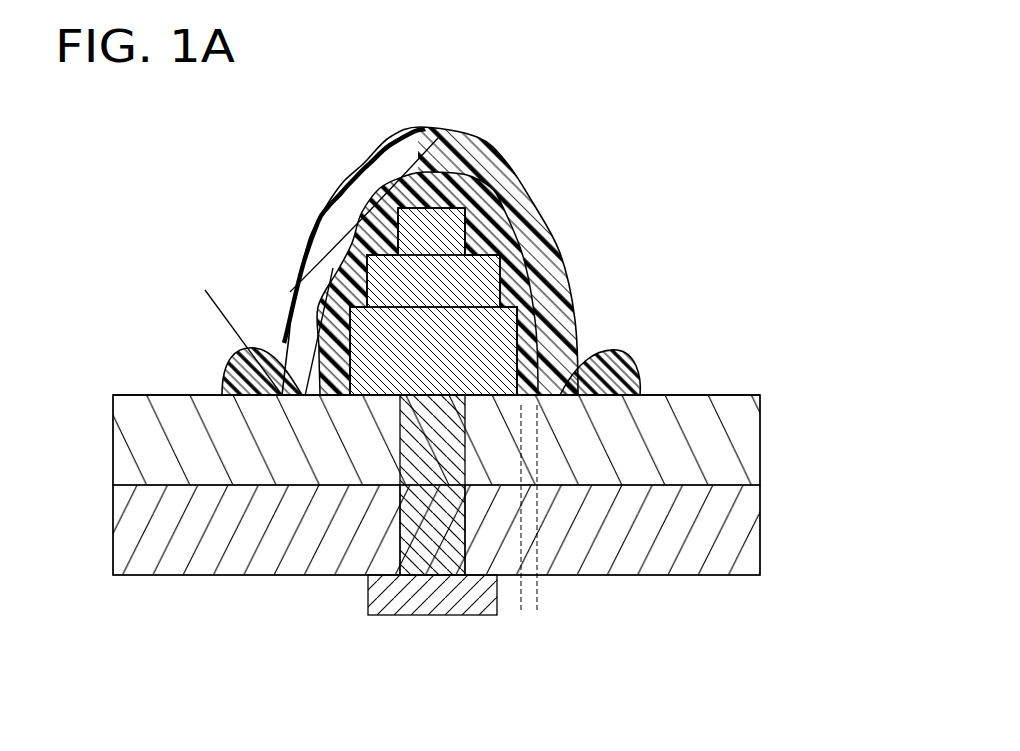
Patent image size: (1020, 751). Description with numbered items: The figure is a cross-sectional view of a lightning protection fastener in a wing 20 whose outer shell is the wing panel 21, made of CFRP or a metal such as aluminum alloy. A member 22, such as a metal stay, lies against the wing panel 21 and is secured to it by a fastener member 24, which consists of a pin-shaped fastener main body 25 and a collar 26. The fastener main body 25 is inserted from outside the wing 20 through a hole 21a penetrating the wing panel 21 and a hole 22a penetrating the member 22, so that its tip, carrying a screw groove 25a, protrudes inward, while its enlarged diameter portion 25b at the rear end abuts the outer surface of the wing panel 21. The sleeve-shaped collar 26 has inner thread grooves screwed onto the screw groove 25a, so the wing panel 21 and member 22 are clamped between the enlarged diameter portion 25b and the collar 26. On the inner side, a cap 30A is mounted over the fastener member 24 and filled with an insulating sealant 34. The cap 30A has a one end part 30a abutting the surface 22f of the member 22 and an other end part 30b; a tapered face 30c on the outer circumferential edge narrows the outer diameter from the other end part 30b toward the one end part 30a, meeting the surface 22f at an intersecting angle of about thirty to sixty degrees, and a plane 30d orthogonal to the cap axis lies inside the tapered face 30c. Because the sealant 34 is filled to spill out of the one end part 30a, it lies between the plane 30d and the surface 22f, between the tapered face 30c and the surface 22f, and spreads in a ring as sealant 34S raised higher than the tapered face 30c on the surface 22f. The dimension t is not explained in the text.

The wing 20 is at (706, 587).
The wing panel 21 is at (752, 549).
The hole 21a is at (400, 516).
The member 22 is at (752, 456).
The hole 22a is at (343, 396).
The surface 22f is at (126, 393).
The fastener member 24 is at (779, 230).
The fastener main body 25 is at (413, 470).
The screw groove 25a is at (470, 217).
The enlarged diameter portion 25b is at (457, 602).
The collar 26 is at (523, 290).
The cap 30A is at (358, 170).
The one end part 30a is at (310, 396).
The other end part 30b is at (427, 133).
The tapered face 30c is at (242, 383).
The plane 30d is at (314, 398).
The sealant 34 is at (349, 224).
The sealant 34S is at (221, 372).
The thickness dimension t is at (483, 535).